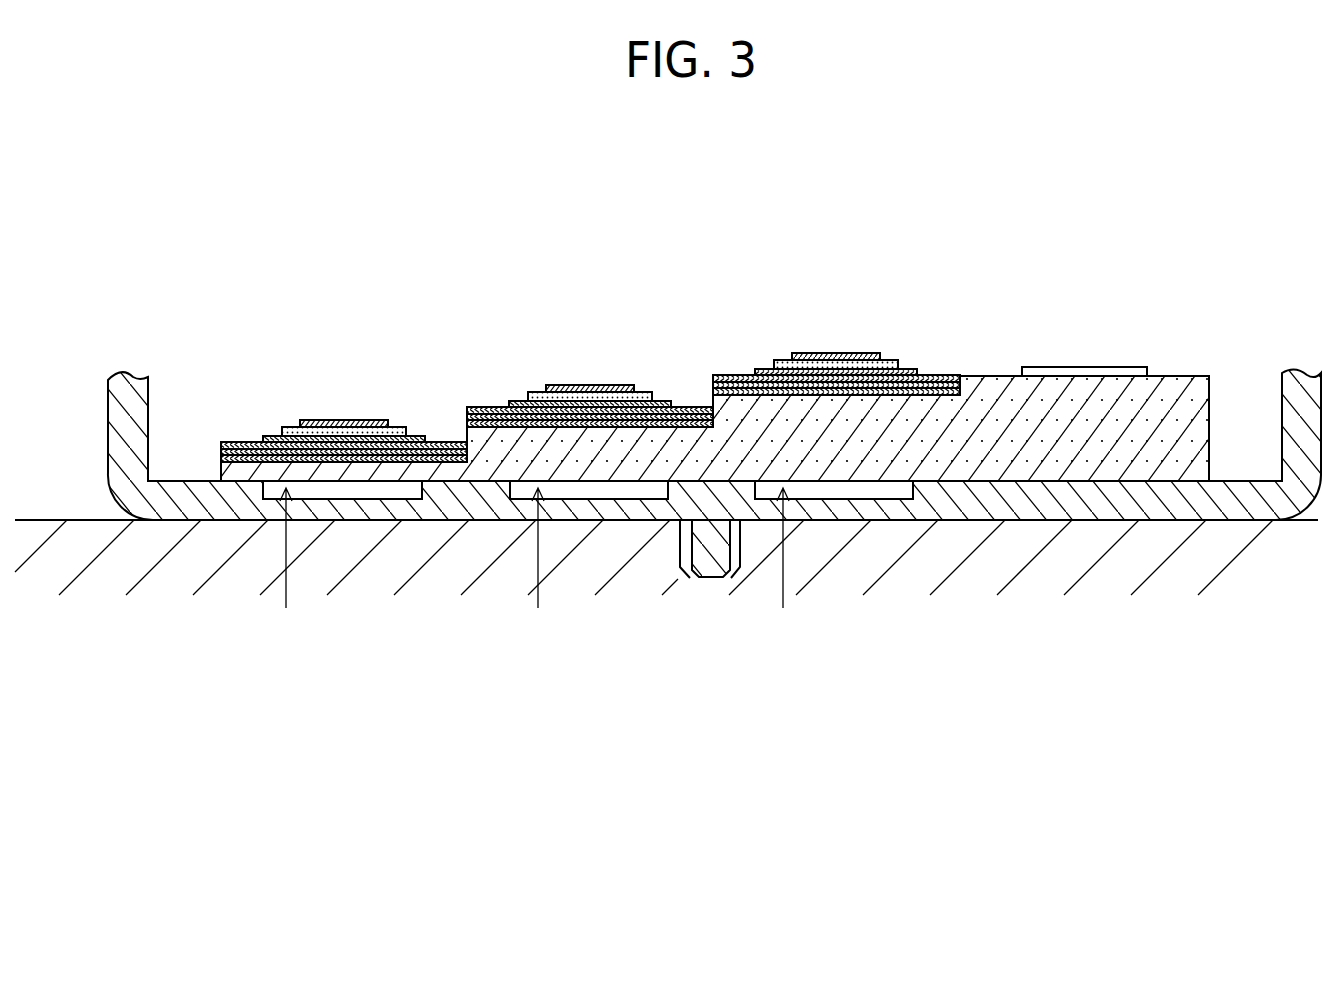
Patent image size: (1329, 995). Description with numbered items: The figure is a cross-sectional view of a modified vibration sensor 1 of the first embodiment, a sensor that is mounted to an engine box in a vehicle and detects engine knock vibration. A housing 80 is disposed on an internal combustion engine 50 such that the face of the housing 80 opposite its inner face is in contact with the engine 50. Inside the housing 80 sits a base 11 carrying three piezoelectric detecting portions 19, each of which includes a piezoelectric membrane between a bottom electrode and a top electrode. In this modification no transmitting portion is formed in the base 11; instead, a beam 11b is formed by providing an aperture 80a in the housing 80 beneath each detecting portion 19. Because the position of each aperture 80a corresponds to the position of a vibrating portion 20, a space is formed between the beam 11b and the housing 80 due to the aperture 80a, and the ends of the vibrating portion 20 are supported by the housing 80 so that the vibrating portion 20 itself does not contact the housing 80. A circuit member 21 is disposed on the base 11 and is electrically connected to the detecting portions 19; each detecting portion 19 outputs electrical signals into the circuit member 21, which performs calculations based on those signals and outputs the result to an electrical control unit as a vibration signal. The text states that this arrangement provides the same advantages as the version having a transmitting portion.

The vibration sensor 1 is at (999, 254).
The base 11 is at (1178, 390).
The beam 11b is at (318, 468).
The piezoelectric detecting portion 19 is at (305, 393).
The vibrating portion 20 is at (534, 563).
The circuit member 21 is at (1085, 370).
The internal combustion engine 50 is at (45, 537).
The housing 80 is at (118, 412).
The aperture 80a is at (348, 500).